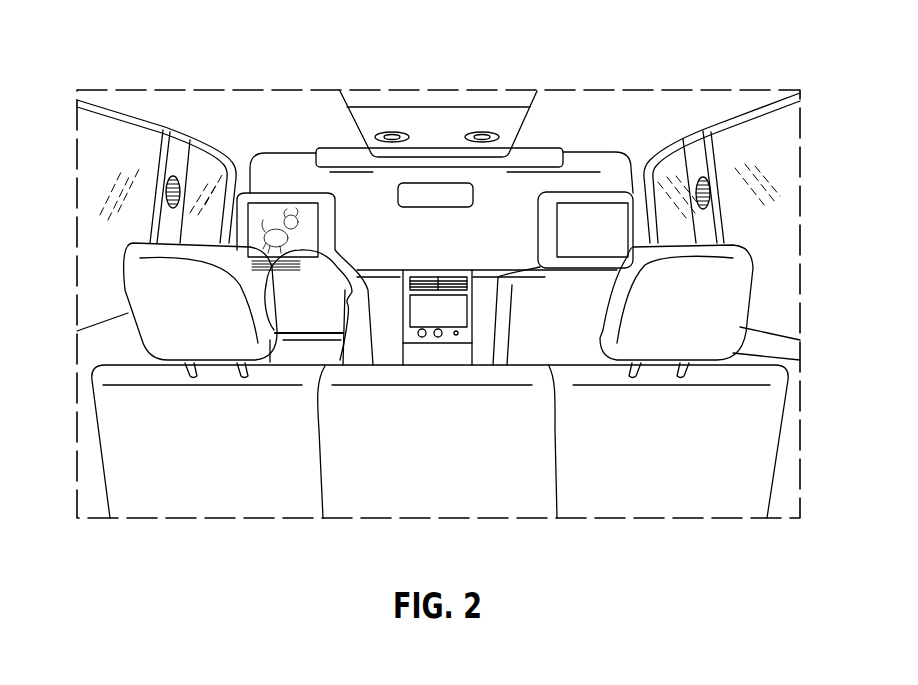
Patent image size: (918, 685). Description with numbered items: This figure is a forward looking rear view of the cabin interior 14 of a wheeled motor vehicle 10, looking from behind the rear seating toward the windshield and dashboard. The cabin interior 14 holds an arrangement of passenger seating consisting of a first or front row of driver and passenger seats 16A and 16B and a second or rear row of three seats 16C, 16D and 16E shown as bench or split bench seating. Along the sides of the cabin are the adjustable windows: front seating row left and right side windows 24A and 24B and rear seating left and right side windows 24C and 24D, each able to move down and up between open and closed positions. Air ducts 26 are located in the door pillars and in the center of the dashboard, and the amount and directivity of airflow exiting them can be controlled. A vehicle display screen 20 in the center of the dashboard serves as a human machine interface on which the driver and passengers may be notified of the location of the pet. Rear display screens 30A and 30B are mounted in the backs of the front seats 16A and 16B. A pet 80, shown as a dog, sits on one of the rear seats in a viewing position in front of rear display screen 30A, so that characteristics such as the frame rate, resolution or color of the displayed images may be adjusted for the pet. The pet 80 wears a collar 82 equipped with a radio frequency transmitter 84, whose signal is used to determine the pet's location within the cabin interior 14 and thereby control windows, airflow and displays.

The vehicle 10 is at (772, 65).
The cabin interior 14 is at (147, 212).
The driver seat 16A is at (327, 256).
The passenger seat 16B is at (347, 352).
The rear seat 16C is at (188, 462).
The rear seat 16D is at (385, 460).
The rear seat 16E is at (688, 463).
The vehicle display screen 20 is at (457, 310).
The front seating row left side window 24A is at (207, 167).
The front seating row right side window 24B is at (673, 167).
The rear seating left side window 24C is at (93, 140).
The rear seating right side window 24D is at (777, 147).
The air duct 26 is at (172, 178).
The rear display screen 30A is at (263, 200).
The rear display screen 30B is at (600, 213).
The pet 80 is at (270, 270).
The collar 82 is at (293, 330).
The RF transmitter 84 is at (432, 268).